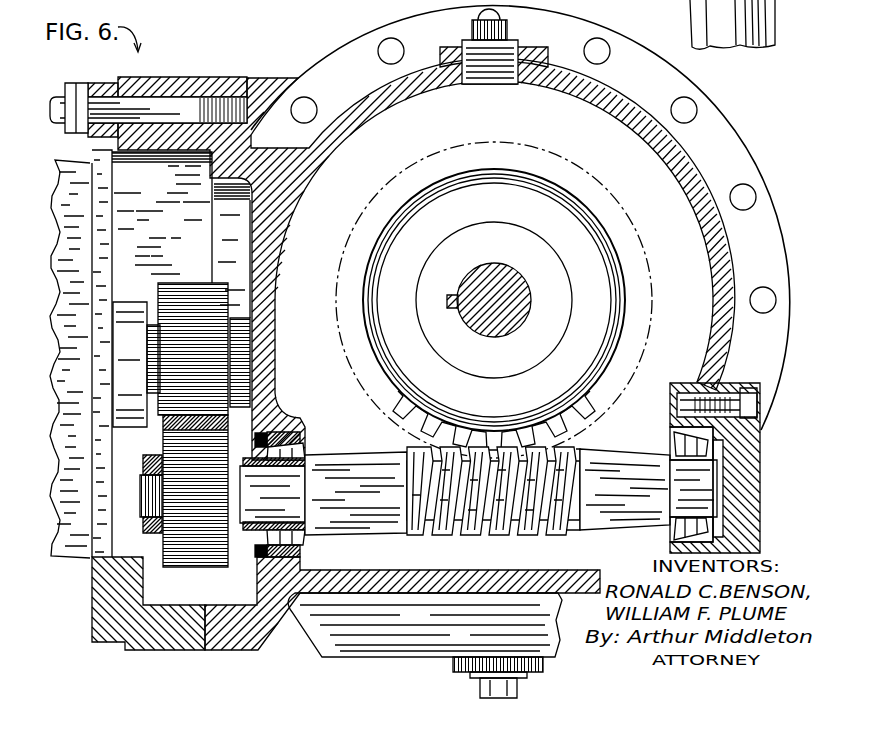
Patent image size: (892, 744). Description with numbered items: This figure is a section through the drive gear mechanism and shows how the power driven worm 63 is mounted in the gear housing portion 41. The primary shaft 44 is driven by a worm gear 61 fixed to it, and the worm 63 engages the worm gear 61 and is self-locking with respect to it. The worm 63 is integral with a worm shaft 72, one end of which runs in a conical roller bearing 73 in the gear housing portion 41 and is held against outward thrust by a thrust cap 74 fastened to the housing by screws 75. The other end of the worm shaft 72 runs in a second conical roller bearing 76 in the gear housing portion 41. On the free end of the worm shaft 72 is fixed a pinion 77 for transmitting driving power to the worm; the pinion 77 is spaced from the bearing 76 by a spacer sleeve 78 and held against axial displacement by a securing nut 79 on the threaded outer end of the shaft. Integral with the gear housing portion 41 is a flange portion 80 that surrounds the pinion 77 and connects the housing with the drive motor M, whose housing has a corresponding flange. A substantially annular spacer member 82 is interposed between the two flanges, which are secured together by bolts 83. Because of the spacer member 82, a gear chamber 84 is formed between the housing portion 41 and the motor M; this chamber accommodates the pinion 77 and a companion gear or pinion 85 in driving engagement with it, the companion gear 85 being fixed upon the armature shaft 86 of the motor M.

The gear housing portion 41 is at (617, 96).
The primary shaft 44 is at (517, 313).
The worm gear 61 is at (600, 418).
The power driven worm 63 is at (593, 494).
The worm shaft 72 is at (272, 494).
The conical roller bearing 73 is at (670, 450).
The thrust cap 74 is at (760, 490).
The screws 75 is at (760, 368).
The conical roller bearing 76 is at (303, 462).
The pinion 77 is at (250, 543).
The spacer sleeve 78 is at (252, 460).
The securing nut 79 is at (152, 464).
The flange portion 80 is at (226, 78).
The spacer member 82 is at (157, 78).
The bolts 83 is at (52, 112).
The gear chamber 84 is at (171, 353).
The companion gear or pinion 85 is at (181, 283).
The armature shaft 86 is at (156, 335).
The drive motor M is at (75, 575).